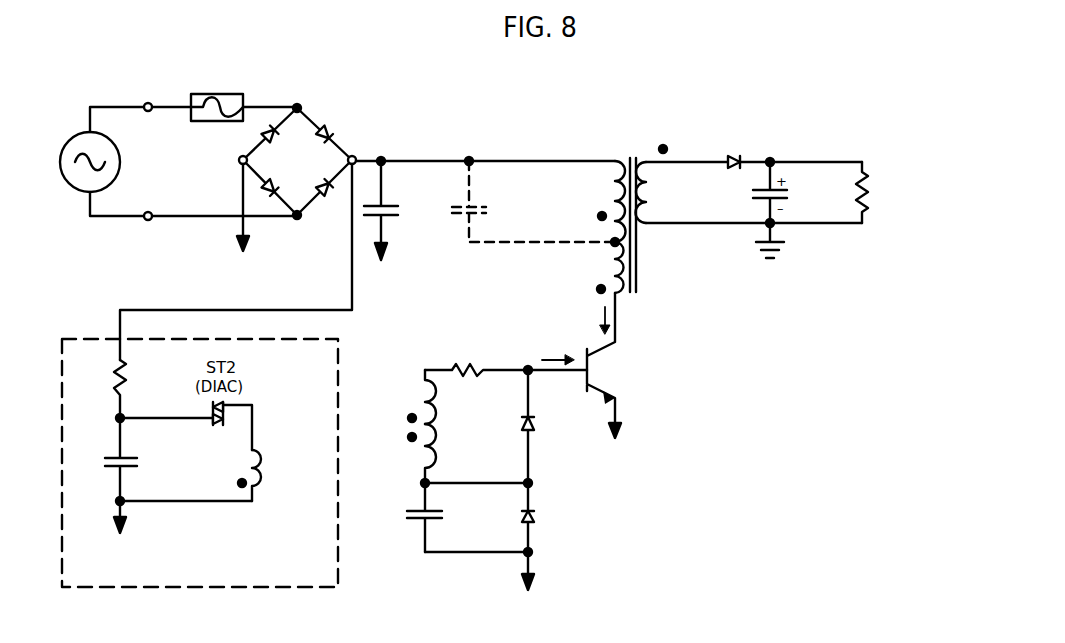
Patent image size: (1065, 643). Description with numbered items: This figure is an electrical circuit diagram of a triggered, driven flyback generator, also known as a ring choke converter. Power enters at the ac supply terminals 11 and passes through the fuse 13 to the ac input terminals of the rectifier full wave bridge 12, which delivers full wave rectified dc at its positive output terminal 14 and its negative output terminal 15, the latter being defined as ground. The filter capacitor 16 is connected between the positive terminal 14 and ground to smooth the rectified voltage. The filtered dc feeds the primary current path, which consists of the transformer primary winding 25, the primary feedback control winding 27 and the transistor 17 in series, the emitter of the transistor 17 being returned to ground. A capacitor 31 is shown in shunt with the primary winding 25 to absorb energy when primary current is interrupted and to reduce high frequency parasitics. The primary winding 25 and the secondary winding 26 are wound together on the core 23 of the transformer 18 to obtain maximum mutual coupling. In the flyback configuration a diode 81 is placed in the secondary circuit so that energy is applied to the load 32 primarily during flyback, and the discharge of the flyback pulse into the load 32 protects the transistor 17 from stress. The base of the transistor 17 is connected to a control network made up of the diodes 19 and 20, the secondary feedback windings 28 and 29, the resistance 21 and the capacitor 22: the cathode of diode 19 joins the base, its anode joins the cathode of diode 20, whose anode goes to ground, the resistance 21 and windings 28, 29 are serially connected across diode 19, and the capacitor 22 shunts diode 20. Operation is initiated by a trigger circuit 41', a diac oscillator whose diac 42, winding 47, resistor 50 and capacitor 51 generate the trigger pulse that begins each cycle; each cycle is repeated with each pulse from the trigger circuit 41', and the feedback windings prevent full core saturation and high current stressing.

The ac supply terminals 11 is at (146, 105).
The rectifier full wave bridge 12 is at (308, 169).
The fuse 13 is at (243, 99).
The positive output terminal 14 is at (353, 158).
The negative output terminal 15 is at (242, 166).
The filter capacitor 16 is at (383, 204).
The transistor 17 is at (600, 359).
The transformer 18 is at (643, 139).
The diode 19 is at (521, 427).
The diode 20 is at (523, 528).
The resistance 21 is at (453, 367).
The capacitor 22 is at (444, 514).
The core 23 is at (640, 278).
The transformer primary winding 25 is at (613, 159).
The secondary winding 26 is at (648, 226).
The primary feedback control winding 27 is at (610, 278).
The secondary feedback winding 28 is at (420, 397).
The secondary feedback winding 29 is at (420, 459).
The capacitor 31 is at (465, 203).
The load 32 is at (864, 188).
The trigger circuit 41' is at (229, 463).
The diac 42 is at (212, 427).
The trigger winding 47 is at (261, 456).
The resistor 50 is at (111, 383).
The capacitor 51 is at (113, 469).
The diode 81 is at (748, 140).